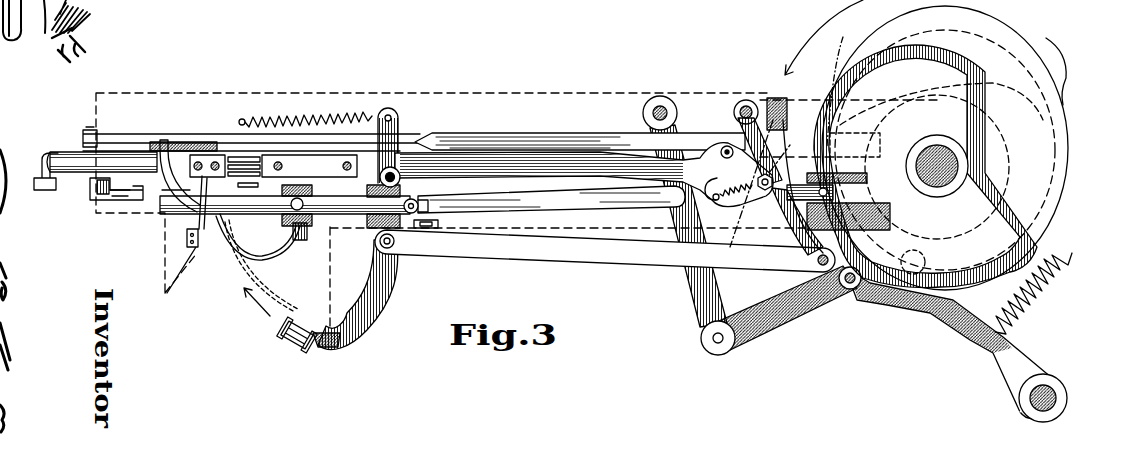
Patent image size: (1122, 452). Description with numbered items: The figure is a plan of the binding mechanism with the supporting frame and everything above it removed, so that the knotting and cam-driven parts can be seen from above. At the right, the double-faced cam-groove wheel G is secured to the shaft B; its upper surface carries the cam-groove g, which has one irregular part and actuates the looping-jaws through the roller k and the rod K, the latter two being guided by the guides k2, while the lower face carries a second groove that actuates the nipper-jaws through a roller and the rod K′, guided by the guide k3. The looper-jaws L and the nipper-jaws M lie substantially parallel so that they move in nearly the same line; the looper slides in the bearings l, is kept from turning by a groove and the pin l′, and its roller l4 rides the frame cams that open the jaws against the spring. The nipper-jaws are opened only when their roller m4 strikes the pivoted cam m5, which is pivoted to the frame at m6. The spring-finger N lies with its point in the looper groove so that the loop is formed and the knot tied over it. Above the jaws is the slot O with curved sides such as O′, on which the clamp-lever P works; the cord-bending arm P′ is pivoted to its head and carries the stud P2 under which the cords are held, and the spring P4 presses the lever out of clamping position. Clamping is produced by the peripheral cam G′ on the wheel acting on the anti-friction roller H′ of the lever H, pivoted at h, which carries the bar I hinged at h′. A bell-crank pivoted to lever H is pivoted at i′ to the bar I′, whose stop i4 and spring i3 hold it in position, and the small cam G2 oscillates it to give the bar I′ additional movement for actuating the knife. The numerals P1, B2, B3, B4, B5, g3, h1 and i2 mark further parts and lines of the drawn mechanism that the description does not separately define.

The nipper-jaws M is at (102, 161).
The roller m4 is at (56, 184).
The pivoted cam m5 is at (92, 194).
The pivot m6 is at (133, 200).
The spring-finger N is at (233, 200).
The looper-jaws L is at (285, 214).
The spring P4 is at (318, 139).
The bearings l is at (400, 180).
The roller l4 is at (412, 170).
The clamp-lever P is at (358, 295).
The pin l′ is at (380, 244).
The cord-bending arm P′ is at (300, 346).
The stud or projection P2 is at (286, 338).
The arrow / end P1 is at (275, 326).
The curved side of slot O′ is at (261, 266).
The slot O is at (191, 234).
The rod K′ is at (580, 141).
The bar I′ is at (584, 175).
The rod K is at (551, 199).
The bar or rod I is at (605, 251).
The hinge h′ is at (815, 261).
The bar B3 is at (688, 226).
The pivot boss B4 is at (675, 113).
The arm B2 is at (779, 310).
The anti-friction roller H′ is at (853, 290).
The spring arm B5 is at (958, 337).
The peripheral cam G′ is at (945, 148).
The small cam G2 is at (941, 150).
The double-faced cam-groove wheel G is at (925, 166).
The dashed circle g3 is at (941, 161).
The cam-groove g is at (902, 256).
The shaft B is at (937, 166).
The guide k3 is at (815, 65).
The roller k is at (838, 192).
The guides k2 is at (850, 206).
The pivot h is at (758, 134).
The dash-dot line h1 is at (760, 183).
The lever H is at (791, 187).
The pivot i′ is at (727, 145).
The nut i2 is at (757, 173).
The spring i3 is at (732, 193).
The stop i4 is at (714, 181).